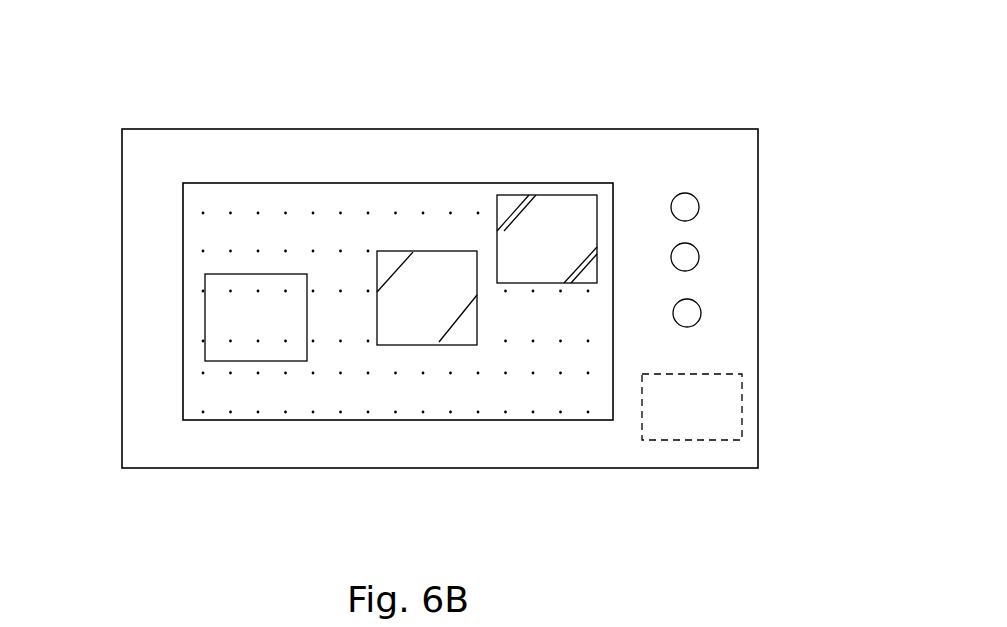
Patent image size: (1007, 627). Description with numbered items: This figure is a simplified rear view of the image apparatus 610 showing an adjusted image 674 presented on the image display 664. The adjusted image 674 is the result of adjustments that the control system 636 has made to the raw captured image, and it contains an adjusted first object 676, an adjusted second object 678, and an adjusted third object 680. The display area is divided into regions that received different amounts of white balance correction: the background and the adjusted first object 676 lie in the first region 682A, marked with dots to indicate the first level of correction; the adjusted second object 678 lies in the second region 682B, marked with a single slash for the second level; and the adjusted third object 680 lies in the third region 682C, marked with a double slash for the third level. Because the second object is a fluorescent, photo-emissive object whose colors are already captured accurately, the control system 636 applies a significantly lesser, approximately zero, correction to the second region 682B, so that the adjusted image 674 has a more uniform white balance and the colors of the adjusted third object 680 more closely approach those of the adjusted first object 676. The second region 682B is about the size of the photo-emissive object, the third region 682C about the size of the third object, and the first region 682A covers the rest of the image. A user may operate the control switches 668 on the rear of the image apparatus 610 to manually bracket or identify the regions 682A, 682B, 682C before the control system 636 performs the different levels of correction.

The image apparatus 610 is at (143, 156).
The image display 664 is at (237, 183).
The first region 682A is at (341, 199).
The second region 682B is at (426, 232).
The third region 682C is at (506, 184).
The adjusted third object 680 is at (537, 218).
The adjusted image 674 is at (182, 321).
The adjusted first object 676 is at (217, 357).
The adjusted second object 678 is at (403, 325).
The control switches 668 is at (692, 207).
The control system 636 is at (710, 398).